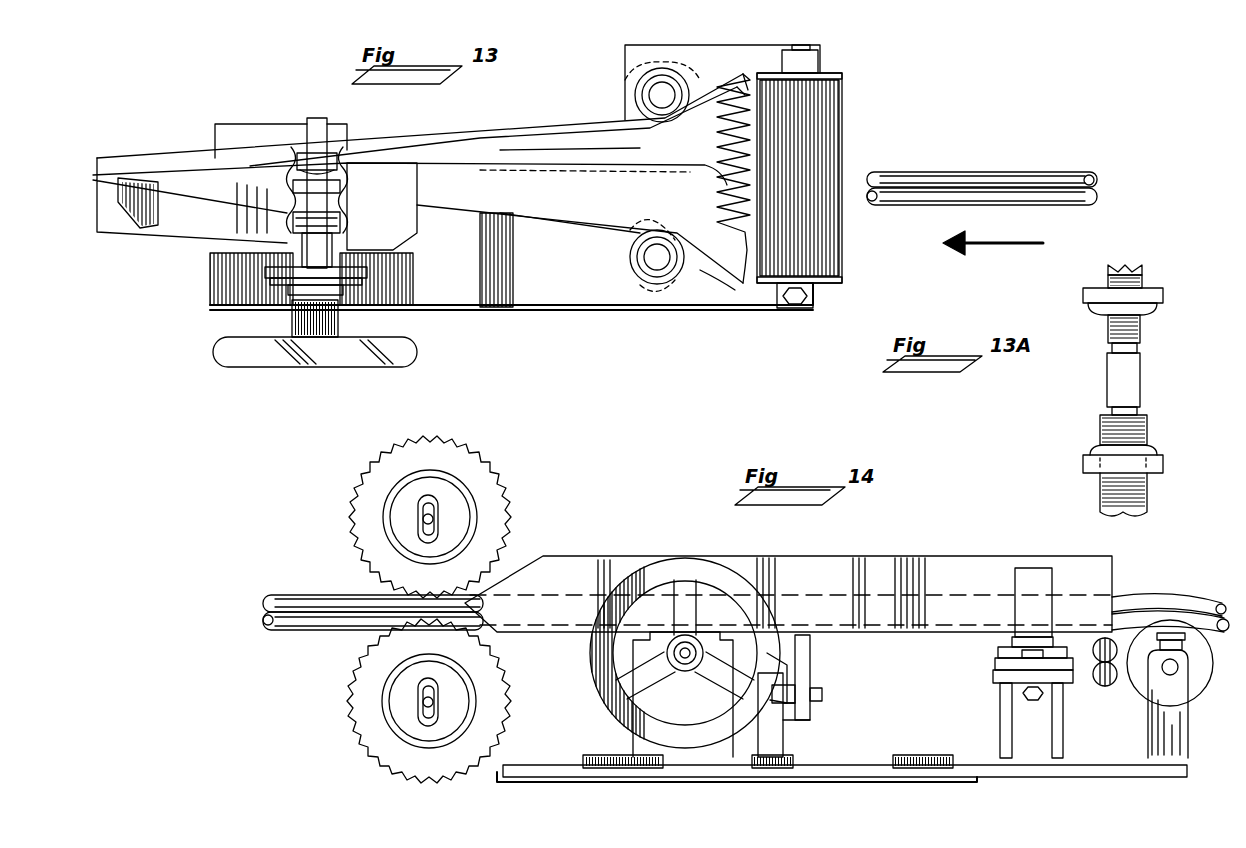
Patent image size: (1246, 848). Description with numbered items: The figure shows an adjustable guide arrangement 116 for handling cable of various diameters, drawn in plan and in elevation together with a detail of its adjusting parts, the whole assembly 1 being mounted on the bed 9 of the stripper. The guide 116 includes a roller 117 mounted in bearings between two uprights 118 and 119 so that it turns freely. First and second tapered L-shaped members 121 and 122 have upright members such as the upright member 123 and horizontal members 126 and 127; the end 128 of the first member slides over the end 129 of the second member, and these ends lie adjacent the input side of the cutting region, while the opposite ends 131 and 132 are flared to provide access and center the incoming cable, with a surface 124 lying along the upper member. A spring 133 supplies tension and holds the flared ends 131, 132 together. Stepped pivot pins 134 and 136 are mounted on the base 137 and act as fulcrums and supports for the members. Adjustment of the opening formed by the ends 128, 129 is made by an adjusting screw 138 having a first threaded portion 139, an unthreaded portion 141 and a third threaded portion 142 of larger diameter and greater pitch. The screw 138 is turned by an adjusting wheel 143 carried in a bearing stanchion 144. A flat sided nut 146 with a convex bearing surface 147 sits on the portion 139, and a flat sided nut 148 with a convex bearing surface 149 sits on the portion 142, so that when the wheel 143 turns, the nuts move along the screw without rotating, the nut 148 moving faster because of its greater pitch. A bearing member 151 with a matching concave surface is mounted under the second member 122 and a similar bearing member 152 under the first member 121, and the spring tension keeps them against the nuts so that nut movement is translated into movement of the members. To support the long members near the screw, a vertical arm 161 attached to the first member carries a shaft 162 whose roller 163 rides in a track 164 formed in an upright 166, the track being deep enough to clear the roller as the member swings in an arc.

In FIG. 13, the bending tool assembly 1 is at (265, 277).
In FIG. 14, the bed 9 is at (977, 788).
In FIG. 13, the adjustable guide arrangement 116 is at (587, 207).
In FIG. 13, the roller 117 is at (840, 122).
In FIG. 14, the roller 117 is at (1202, 682).
In FIG. 13, the upright 118 is at (817, 297).
In FIG. 14, the upright 118 is at (1185, 730).
In FIG. 13, the upright 119 is at (817, 52).
In FIG. 13, the first tapered L-shaped member 121 is at (580, 267).
In FIG. 13, the second tapered L-shaped member 122 is at (618, 138).
In FIG. 13, the upright member 123 is at (443, 202).
In FIG. 14, the upright member 123 is at (955, 562).
In FIG. 13, the upper arm surface 124 is at (555, 130).
In FIG. 13, the horizontal member 126 is at (607, 210).
In FIG. 13, the horizontal member 127 is at (475, 147).
In FIG. 13, the end 128 is at (118, 202).
In FIG. 13, the end 129 is at (143, 165).
In FIG. 13, the flared end 131 is at (725, 285).
In FIG. 13, the flared end 132 is at (717, 77).
In FIG. 13, the spring 133 is at (747, 80).
In FIG. 14, the spring 133 is at (1117, 647).
In FIG. 13, the stepped pivot pin 134 is at (662, 260).
In FIG. 14, the stepped pivot pin 134 is at (1028, 570).
In FIG. 13, the stepped pivot pin 136 is at (655, 93).
In FIG. 14, the base 137 is at (1077, 770).
In FIG. 13, the adjusting screw 138 is at (322, 117).
In FIG. 13A, the adjusting screw 138 is at (1130, 262).
In FIG. 13, the first threaded portion 139 is at (303, 187).
In FIG. 13A, the first threaded portion 139 is at (1110, 272).
In FIG. 13A, the unthreaded portion 141 is at (1102, 383).
In FIG. 13A, the third threaded portion 142 is at (1150, 497).
In FIG. 13, the adjusting wheel 143 is at (213, 345).
In FIG. 14, the adjusting wheel 143 is at (678, 567).
In FIG. 14, the bearing stanchion 144 is at (633, 745).
In FIG. 13, the flat sided nut 146 is at (333, 150).
In FIG. 13A, the flat sided nut 146 is at (1152, 285).
In FIG. 13A, the convex bearing surface 147 is at (1150, 317).
In FIG. 13, the flat sided nut 148 is at (293, 230).
In FIG. 13A, the flat sided nut 148 is at (1083, 472).
In FIG. 13A, the convex bearing surface 149 is at (1098, 443).
In FIG. 13, the bearing member 151 is at (317, 197).
In FIG. 13, the bearing member 152 is at (293, 217).
In FIG. 14, the vertical arm 161 is at (812, 647).
In FIG. 14, the shaft 162 is at (820, 700).
In FIG. 14, the roller 163 is at (795, 678).
In FIG. 14, the track 164 is at (800, 722).
In FIG. 14, the upright 166 is at (790, 742).